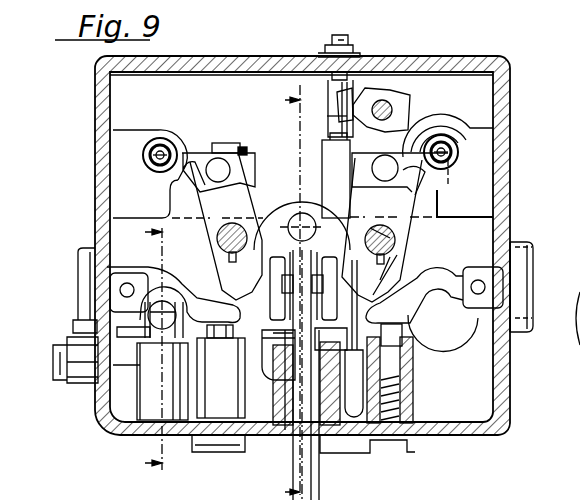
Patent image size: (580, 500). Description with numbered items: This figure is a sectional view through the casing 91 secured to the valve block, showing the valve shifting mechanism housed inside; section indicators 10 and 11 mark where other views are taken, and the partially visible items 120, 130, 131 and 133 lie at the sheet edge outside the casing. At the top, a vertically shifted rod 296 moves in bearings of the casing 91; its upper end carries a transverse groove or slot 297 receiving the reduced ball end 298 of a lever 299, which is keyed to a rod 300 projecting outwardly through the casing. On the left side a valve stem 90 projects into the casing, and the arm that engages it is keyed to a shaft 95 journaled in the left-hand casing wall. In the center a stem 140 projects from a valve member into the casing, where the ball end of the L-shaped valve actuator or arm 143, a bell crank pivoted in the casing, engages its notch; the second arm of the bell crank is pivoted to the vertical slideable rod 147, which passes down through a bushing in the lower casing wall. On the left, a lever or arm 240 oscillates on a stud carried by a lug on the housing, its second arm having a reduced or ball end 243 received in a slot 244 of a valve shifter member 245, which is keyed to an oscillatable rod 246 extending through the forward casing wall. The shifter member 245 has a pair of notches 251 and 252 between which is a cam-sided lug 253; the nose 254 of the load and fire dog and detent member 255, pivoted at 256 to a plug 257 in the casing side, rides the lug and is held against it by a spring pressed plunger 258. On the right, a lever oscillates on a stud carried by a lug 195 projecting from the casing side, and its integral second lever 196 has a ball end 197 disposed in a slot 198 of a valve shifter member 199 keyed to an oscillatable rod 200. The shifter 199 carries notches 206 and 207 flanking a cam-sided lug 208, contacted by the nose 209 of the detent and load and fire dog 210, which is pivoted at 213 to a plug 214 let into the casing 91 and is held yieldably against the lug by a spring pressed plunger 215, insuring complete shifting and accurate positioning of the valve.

The casing 91 is at (504, 100).
The section line 10 is at (279, 292).
The section line 11 is at (142, 347).
The transverse groove or slot 297 is at (332, 98).
The reduced ball end 298 is at (347, 102).
The lever 299 is at (402, 100).
The rod 300 is at (392, 110).
The vertically shifted rod 296 is at (327, 116).
The slot 244 is at (190, 160).
The valve shifter member 245 is at (190, 199).
The notch 251 is at (230, 290).
The lever or arm 240 is at (248, 160).
The reduced or ball end 243 is at (246, 152).
The oscillatable rod 246 is at (238, 214).
The stem 140 is at (300, 195).
The notch 252 is at (270, 236).
The reduced or ball end 197 is at (339, 175).
The valve actuator or arm 143 is at (346, 230).
The notch 206 is at (366, 285).
The slot 198 is at (425, 185).
The second lever 196 is at (440, 134).
The lug 195 is at (440, 217).
The oscillatable rod 200 is at (395, 248).
The valve shifter member 199 is at (402, 237).
The notch 207 is at (384, 275).
The nose 209 is at (414, 289).
The lug 208 is at (388, 325).
The detent and load and fire dog 210 is at (465, 298).
The pivot 213 is at (486, 284).
The plug 214 is at (533, 286).
The load and fire dog and detent member 255 is at (200, 290).
The pivot 256 is at (133, 290).
The plug 257 is at (84, 250).
The valve stem 90 is at (156, 330).
The spring pressed plunger 258 is at (205, 338).
The nose 254 is at (227, 321).
The lug 253 is at (270, 368).
The vertical slideable rod 147 is at (302, 468).
The spring pressed plunger 215 is at (413, 370).
The shaft 95 is at (58, 383).
The part 120 is at (454, 496).
The part 130 is at (488, 496).
The part 131 is at (521, 491).
The part 133 is at (561, 496).